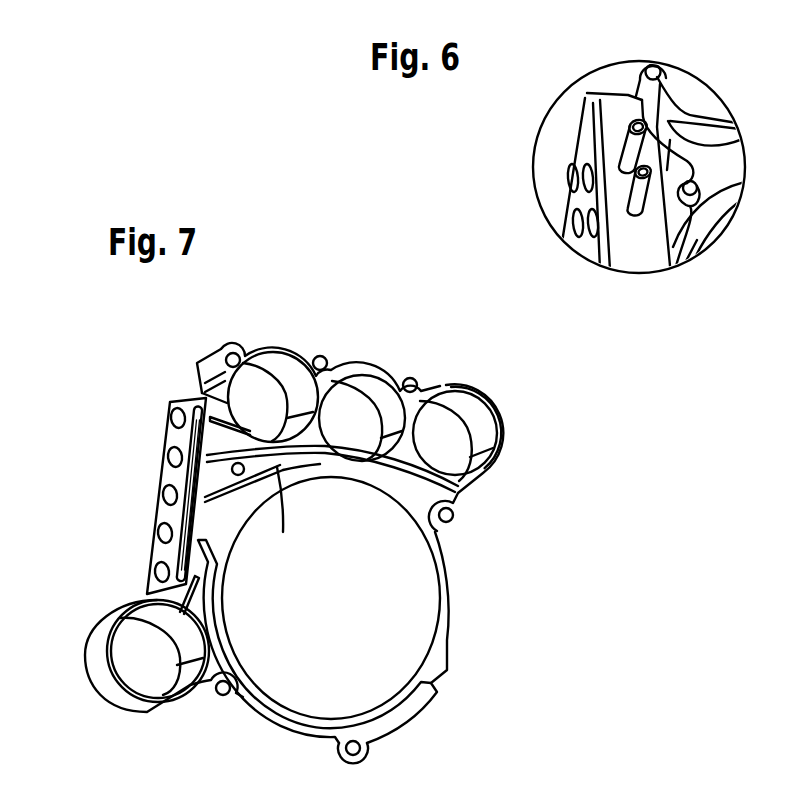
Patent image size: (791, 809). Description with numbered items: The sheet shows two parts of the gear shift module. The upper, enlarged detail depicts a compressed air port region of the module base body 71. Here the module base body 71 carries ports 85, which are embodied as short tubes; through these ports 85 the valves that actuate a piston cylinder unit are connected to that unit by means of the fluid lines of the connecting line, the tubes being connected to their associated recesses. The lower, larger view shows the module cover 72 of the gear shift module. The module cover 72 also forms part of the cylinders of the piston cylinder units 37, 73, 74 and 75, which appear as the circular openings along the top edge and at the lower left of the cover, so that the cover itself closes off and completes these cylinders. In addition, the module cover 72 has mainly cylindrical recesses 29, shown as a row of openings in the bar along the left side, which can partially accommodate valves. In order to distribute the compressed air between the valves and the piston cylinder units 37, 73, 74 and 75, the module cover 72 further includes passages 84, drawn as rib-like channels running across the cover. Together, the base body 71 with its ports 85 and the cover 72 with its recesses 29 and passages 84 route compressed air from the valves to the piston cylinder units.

In FIG. 6, the module base body 71 is at (612, 100).
In FIG. 6, the ports 85 is at (622, 143).
In FIG. 7, the module cover 72 is at (527, 430).
In FIG. 7, the piston cylinder unit 74 is at (270, 393).
In FIG. 7, the piston cylinder unit 37 is at (360, 412).
In FIG. 7, the piston cylinder unit 73 is at (448, 430).
In FIG. 7, the cylindrical recesses 29 is at (172, 452).
In FIG. 7, the passages 84 is at (237, 483).
In FIG. 7, the piston cylinder unit 75 is at (133, 648).